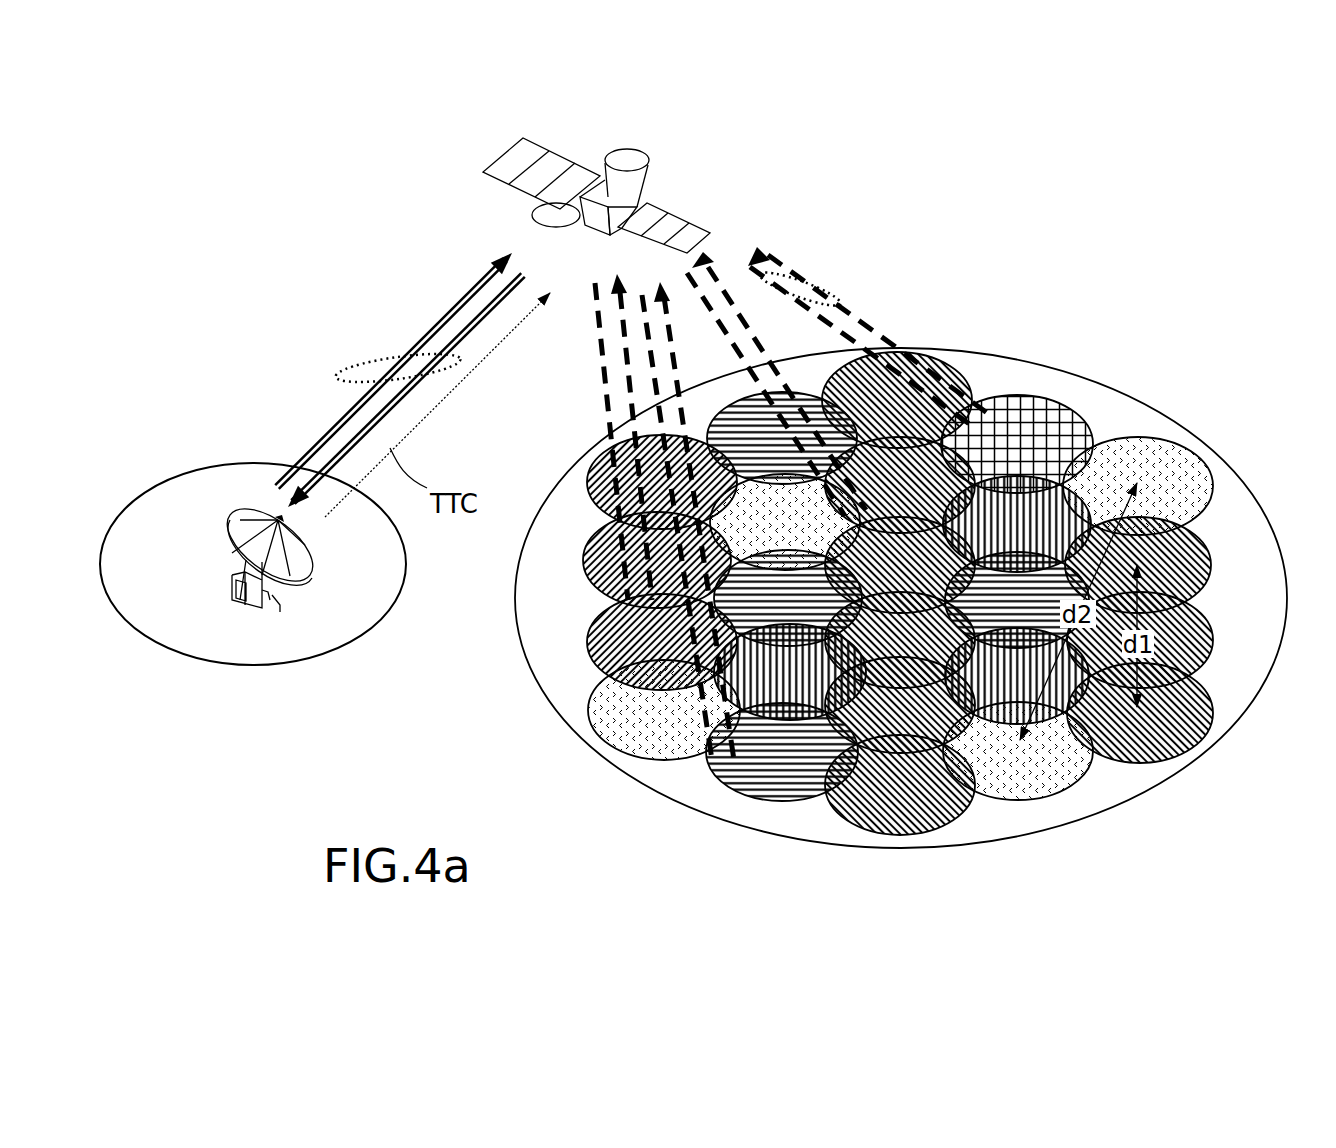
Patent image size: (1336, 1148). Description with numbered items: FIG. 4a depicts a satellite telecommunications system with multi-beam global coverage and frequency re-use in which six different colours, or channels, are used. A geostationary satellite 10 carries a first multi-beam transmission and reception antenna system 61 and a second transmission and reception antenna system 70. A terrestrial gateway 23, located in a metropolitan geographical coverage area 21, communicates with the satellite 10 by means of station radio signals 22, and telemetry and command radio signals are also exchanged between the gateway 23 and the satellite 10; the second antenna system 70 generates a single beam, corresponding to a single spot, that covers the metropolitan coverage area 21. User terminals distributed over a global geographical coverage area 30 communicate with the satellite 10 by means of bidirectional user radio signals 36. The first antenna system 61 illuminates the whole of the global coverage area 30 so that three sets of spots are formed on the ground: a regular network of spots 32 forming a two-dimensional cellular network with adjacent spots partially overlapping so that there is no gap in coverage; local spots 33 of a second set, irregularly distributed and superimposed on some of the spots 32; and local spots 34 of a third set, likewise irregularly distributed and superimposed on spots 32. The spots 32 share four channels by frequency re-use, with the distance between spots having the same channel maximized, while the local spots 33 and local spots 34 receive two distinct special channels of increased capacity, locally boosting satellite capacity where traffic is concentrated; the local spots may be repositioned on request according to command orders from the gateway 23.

The geostationary satellite 10 is at (593, 162).
The first multi-beam transmission and reception antenna system 61 is at (650, 158).
The second transmission and reception antenna system 70 is at (532, 212).
The station radio signals 22 is at (332, 368).
The terrestrial gateway 23 is at (238, 557).
The metropolitan geographical coverage area 21 is at (348, 645).
The global geographical coverage area 30 is at (1170, 780).
The spots of the first set 32 is at (930, 836).
The local spots of the second set 33 is at (1167, 447).
The local spots of the third set 34 is at (1050, 397).
The bidirectional user radio signals 36 is at (843, 290).